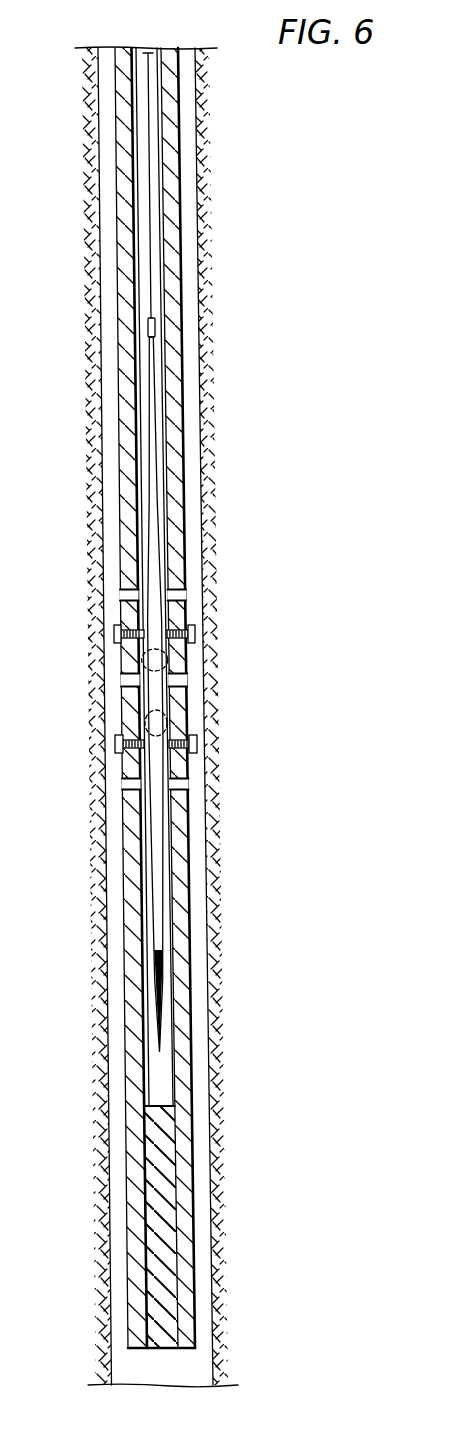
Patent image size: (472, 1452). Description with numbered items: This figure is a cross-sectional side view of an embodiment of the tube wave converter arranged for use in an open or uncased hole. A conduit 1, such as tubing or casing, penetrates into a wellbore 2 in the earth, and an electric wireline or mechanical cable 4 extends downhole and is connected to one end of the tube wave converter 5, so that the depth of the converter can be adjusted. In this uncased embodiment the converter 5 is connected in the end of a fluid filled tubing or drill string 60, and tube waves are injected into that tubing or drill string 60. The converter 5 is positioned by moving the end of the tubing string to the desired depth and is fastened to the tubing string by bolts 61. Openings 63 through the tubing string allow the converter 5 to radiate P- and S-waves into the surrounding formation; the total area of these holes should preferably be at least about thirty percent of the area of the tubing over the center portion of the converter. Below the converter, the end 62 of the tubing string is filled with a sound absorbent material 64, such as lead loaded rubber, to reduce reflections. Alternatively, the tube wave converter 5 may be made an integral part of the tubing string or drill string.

The conduit 1 is at (190, 982).
The wellbore 2 is at (210, 1170).
The cable 4 is at (152, 215).
The tube wave converter 5 is at (160, 503).
The tubing or drill string 60 is at (173, 118).
The bolts 61 is at (120, 636).
The end of the tubing string 62 is at (170, 1350).
The openings 63 is at (123, 597).
The sound absorbent material 64 is at (165, 1243).